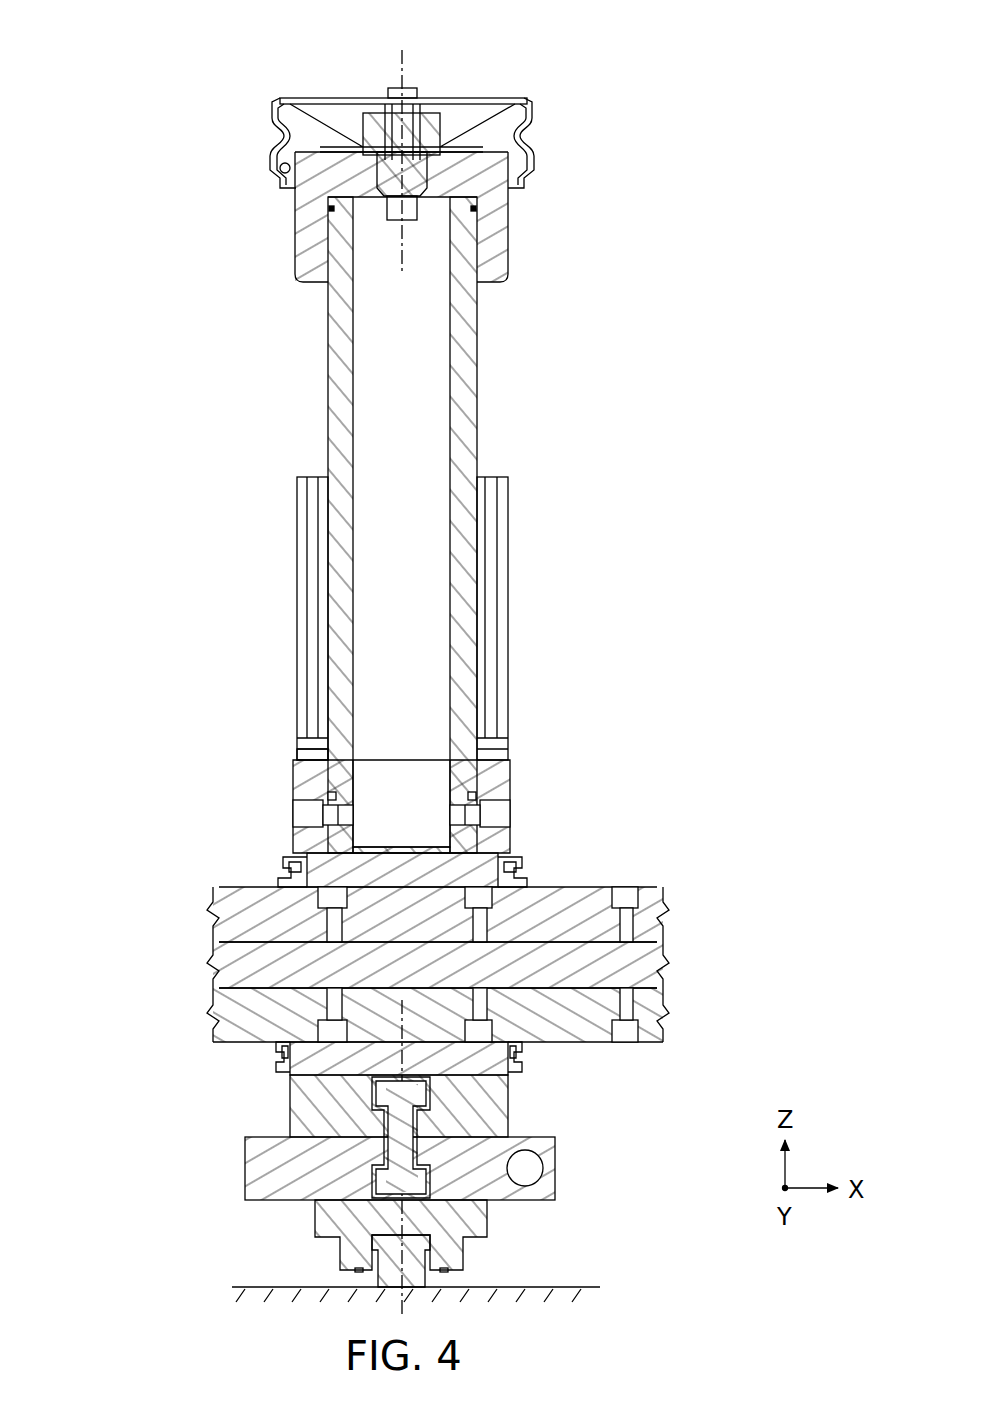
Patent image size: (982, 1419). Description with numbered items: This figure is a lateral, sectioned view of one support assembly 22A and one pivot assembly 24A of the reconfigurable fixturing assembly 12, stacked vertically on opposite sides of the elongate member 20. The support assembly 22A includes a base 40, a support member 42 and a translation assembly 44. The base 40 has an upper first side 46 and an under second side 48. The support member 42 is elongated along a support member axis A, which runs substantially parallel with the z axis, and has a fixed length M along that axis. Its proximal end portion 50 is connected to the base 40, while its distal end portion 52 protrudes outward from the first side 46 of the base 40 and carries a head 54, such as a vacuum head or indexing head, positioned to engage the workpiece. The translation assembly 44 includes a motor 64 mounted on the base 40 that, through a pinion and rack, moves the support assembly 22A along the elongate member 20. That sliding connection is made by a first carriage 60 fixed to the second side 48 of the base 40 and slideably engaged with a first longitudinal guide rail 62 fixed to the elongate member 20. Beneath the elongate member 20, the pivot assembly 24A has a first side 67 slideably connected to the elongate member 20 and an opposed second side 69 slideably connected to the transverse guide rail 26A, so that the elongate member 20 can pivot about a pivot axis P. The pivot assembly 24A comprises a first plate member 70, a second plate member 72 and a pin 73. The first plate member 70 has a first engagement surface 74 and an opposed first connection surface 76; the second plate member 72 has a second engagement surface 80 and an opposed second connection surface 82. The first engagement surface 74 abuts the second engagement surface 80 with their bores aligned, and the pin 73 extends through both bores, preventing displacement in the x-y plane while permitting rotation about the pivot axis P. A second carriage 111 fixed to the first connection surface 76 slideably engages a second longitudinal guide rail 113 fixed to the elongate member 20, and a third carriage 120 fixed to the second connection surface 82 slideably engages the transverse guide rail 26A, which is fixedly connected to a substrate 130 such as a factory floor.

The reconfigurable fixturing assembly 12 is at (785, 122).
The distal end portion 52 is at (566, 137).
The head 54 is at (492, 94).
The support member axis A is at (402, 84).
The support member 42 is at (328, 368).
The translation assembly 44 is at (535, 520).
The motor 64 is at (508, 598).
The first side 46 is at (318, 760).
The base 40 is at (508, 778).
The proximal end portion 50 is at (545, 818).
The first carriage 60 is at (287, 866).
The second side 48 is at (513, 868).
The first longitudinal guide rail 62 is at (210, 912).
The elongate member 20 is at (210, 966).
The second longitudinal guide rail 113 is at (665, 1010).
The first side 67 is at (478, 1072).
The first connection surface 76 is at (277, 1062).
The second carriage 111 is at (522, 1062).
The second engagement surface 80 is at (268, 1136).
The first plate member 70 is at (508, 1120).
The pin 73 is at (425, 1126).
The second plate member 72 is at (548, 1165).
The first engagement surface 74 is at (333, 1128).
The pivot assembly 24A is at (222, 1075).
The second connection surface 82 is at (282, 1200).
The third carriage 120 is at (487, 1222).
The transverse guide rail 26A is at (430, 1252).
The substrate 130 is at (252, 1287).
The second side 69 is at (210, 1248).
The pivot axis P is at (405, 1302).
The length M is at (210, 887).
The support assembly 22A is at (200, 95).